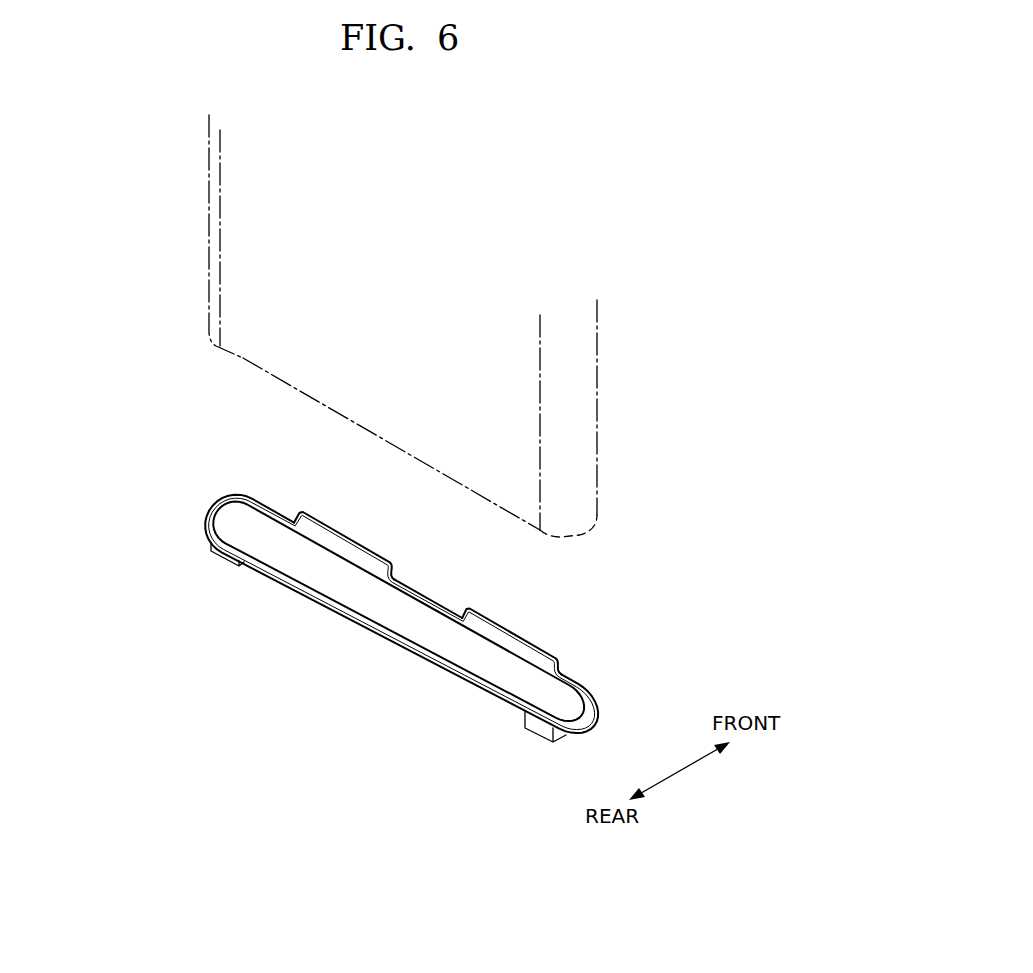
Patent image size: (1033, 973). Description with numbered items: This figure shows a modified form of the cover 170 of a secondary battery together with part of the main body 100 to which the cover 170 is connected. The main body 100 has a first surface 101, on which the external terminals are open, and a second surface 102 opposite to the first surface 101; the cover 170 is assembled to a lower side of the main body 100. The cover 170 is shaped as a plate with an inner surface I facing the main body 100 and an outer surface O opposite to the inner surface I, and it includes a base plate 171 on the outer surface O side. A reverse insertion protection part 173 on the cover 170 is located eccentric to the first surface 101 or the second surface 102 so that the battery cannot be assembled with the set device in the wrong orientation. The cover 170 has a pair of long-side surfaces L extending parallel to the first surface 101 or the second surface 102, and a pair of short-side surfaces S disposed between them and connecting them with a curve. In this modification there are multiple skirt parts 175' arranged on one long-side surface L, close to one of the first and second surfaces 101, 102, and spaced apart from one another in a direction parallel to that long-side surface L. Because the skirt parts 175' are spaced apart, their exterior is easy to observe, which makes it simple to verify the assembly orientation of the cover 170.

The main body 100 is at (452, 326).
The first surface 101 is at (597, 376).
The second surface 102 is at (540, 393).
The cover 170 is at (352, 635).
The base plate 171 is at (572, 712).
The reverse insertion protection part 173 is at (534, 745).
The skirt parts 175' is at (427, 573).
The short-side surfaces S is at (208, 506).
The inner surface I is at (415, 620).
The long-side surfaces L is at (305, 592).
The outer surface O is at (377, 636).